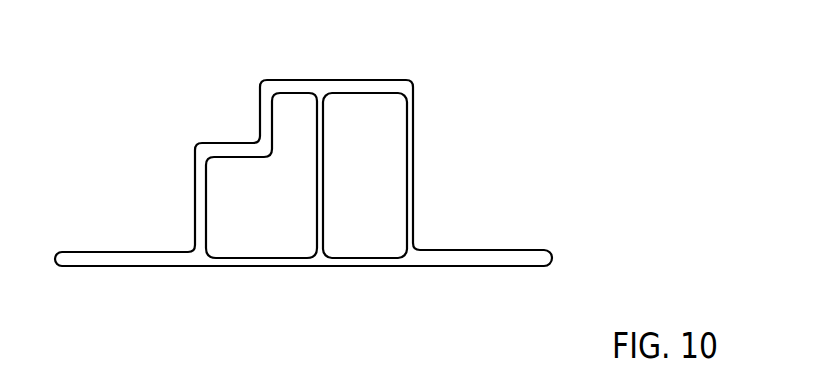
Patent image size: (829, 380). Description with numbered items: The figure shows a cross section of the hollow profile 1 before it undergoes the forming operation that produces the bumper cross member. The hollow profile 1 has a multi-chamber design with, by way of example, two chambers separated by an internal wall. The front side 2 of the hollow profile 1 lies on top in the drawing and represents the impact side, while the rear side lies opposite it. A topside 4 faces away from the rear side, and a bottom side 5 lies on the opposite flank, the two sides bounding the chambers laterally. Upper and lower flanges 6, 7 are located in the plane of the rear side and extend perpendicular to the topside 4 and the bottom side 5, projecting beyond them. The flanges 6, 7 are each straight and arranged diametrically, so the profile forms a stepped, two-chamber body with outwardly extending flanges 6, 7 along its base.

The hollow profile 1 is at (308, 137).
The front side 2 is at (340, 78).
The topside 4 is at (193, 200).
The bottom side 5 is at (415, 122).
The upper flange 6 is at (93, 258).
The lower flange 7 is at (475, 252).